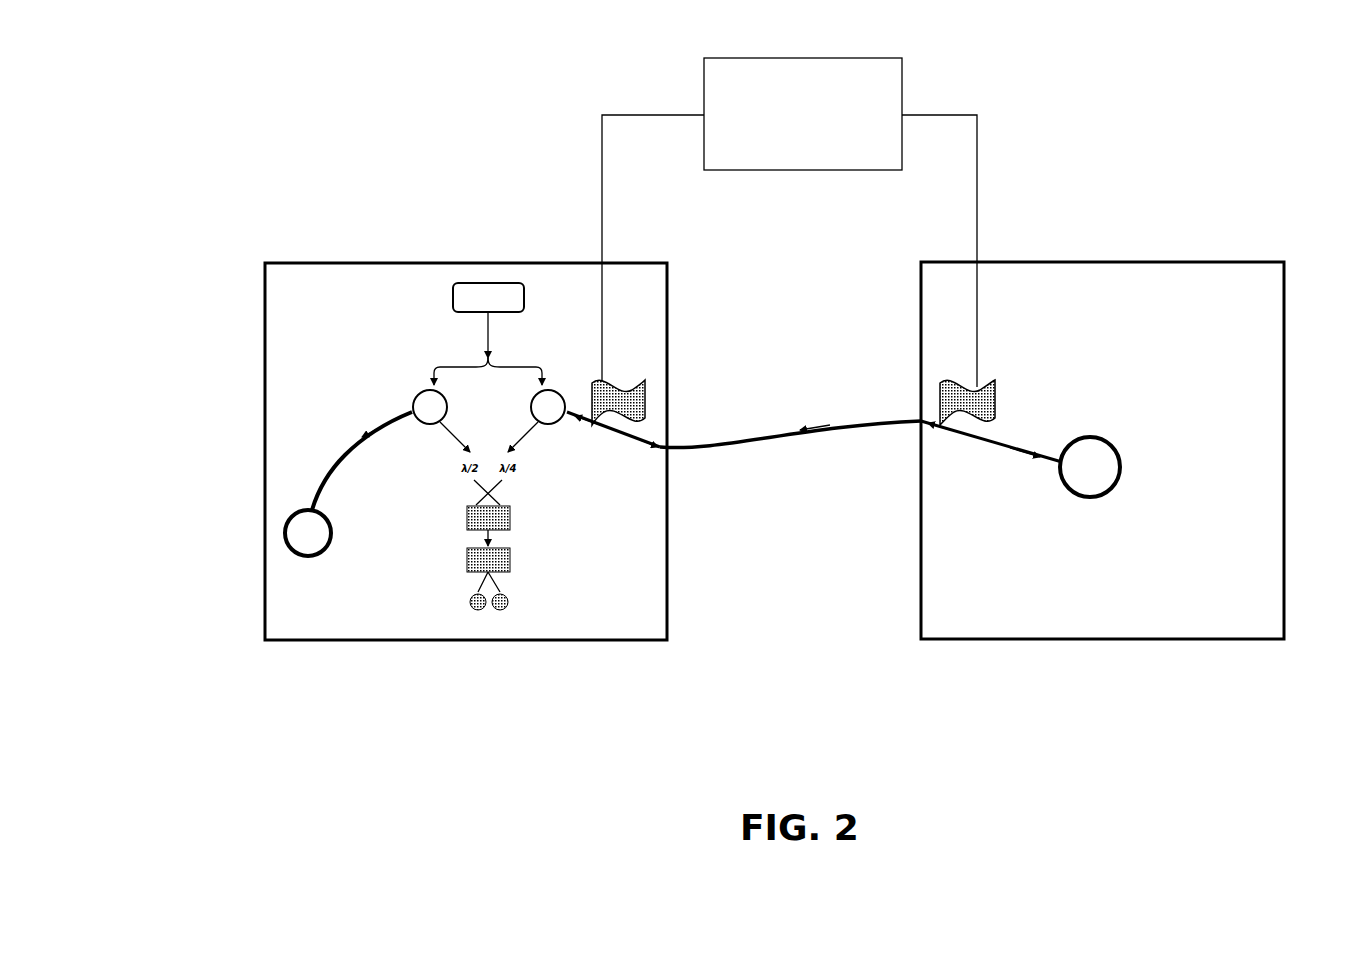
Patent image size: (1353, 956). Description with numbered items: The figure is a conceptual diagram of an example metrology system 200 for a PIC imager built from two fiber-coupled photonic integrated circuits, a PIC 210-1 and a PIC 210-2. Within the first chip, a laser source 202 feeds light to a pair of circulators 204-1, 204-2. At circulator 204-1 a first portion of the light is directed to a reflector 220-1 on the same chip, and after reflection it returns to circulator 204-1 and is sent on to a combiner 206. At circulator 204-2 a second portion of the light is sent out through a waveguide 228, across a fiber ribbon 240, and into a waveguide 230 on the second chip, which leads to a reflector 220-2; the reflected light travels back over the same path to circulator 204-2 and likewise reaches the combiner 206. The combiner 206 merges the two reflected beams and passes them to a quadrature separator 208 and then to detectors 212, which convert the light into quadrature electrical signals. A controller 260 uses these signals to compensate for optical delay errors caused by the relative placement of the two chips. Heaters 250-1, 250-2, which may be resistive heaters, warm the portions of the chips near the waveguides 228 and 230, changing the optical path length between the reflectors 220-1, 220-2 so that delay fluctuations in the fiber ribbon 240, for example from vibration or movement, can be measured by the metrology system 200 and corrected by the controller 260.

The metrology system 200 is at (264, 88).
The laser source 202 is at (497, 282).
The circulator 204-1 is at (428, 428).
The circulator 204-2 is at (553, 428).
The combiner 206 is at (506, 524).
The quadrature separator 208 is at (464, 560).
The PIC 210-1 is at (297, 650).
The PIC 210-2 is at (1210, 645).
The detectors 212 is at (501, 614).
The reflector 220-1 is at (283, 530).
The reflector 220-2 is at (1120, 442).
The waveguide 228 is at (652, 440).
The waveguide 230 is at (978, 438).
The fiber ribbon 240 is at (808, 420).
The heater 250-1 is at (617, 380).
The heater 250-2 is at (946, 380).
The controller 260 is at (789, 222).